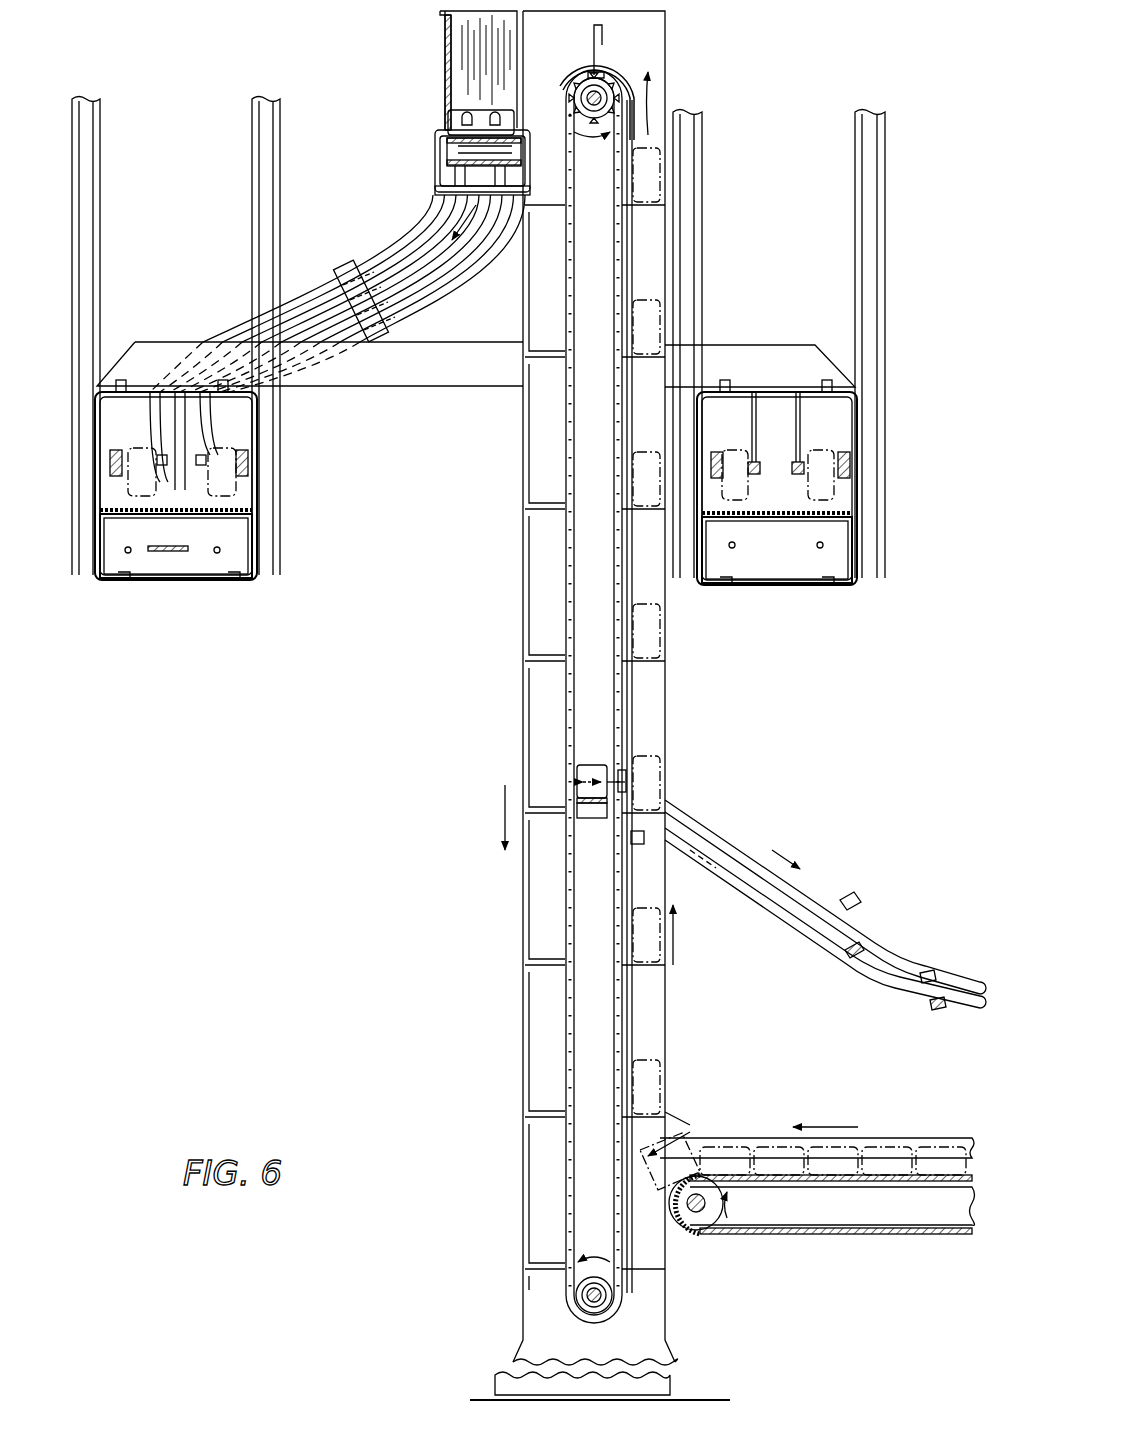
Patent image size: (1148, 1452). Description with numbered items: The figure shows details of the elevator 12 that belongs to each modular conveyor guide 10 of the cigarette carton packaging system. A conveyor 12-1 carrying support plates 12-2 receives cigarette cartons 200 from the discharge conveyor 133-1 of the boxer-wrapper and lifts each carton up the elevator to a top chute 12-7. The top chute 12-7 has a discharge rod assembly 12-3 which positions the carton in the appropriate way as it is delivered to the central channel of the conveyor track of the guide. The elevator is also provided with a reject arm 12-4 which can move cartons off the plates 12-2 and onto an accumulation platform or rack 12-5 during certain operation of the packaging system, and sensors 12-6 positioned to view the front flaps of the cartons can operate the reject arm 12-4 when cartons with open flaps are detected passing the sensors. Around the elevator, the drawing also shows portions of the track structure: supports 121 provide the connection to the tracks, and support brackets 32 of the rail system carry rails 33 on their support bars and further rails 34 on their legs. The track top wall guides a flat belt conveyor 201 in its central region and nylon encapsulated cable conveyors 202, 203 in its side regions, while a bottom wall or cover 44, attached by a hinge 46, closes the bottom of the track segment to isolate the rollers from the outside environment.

The modular conveyor guide 10 is at (160, 66).
The elevator 12 is at (686, 30).
The conveyor 12-1 is at (630, 242).
The support plates 12-2 is at (657, 1112).
The discharge rod assembly 12-3 is at (398, 242).
The reject arm 12-4 is at (600, 770).
The accumulation platform or rack 12-5 is at (788, 876).
The sensors 12-6 is at (642, 848).
The top chute 12-7 is at (567, 52).
The support brackets 32 is at (284, 194).
The rails 33 is at (800, 462).
The rails 34 is at (250, 470).
The bottom wall or cover 44 is at (178, 582).
The hinge 46 is at (108, 582).
The supports 121 is at (445, 385).
The discharge conveyor 133-1 is at (810, 1224).
The cartons 200 is at (660, 312).
The flat belt conveyor 201 is at (160, 552).
The nylon encapsulated cable conveyor 202 is at (128, 554).
The nylon encapsulated cable conveyor 203 is at (217, 554).